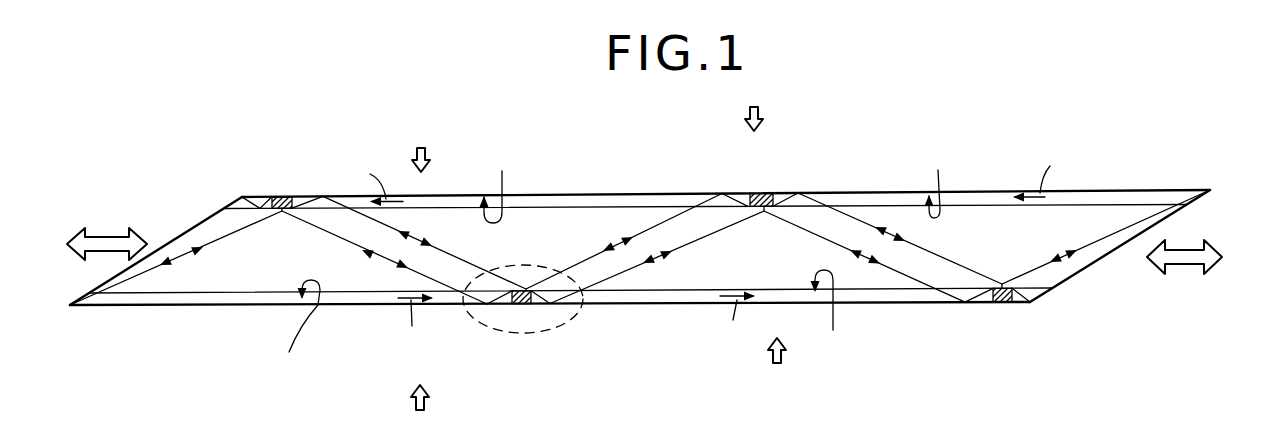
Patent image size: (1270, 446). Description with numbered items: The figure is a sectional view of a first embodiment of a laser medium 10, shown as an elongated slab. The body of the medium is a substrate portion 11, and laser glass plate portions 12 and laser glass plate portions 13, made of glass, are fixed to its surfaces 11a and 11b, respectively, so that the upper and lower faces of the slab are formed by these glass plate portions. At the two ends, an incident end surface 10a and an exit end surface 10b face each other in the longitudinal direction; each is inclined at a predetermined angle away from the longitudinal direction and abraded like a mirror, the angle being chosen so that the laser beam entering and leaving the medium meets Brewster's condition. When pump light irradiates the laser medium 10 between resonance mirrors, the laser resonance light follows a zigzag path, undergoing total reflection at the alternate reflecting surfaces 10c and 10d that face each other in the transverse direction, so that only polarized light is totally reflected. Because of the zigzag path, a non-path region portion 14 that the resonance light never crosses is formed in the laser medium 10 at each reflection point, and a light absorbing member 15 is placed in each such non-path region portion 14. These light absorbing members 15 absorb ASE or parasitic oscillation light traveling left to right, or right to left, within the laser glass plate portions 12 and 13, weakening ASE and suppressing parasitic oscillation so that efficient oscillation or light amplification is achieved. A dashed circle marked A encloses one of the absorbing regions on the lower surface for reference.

The laser medium 10 is at (852, 414).
The incident end surface 10a is at (156, 226).
The exit end surface 10b is at (1120, 266).
The reflecting surface 10c is at (726, 183).
The reflecting surface 10d is at (573, 328).
The substrate portion 11 is at (1072, 217).
The surface of substrate portion 11a is at (705, 176).
The surface of substrate portion 11b is at (570, 337).
The laser glass plate portion 12 is at (690, 194).
The laser glass plate portion 13 is at (226, 304).
The non-path region portion 14 is at (275, 196).
The light absorbing member 15 is at (285, 197).
The enlarged portion A is at (585, 321).